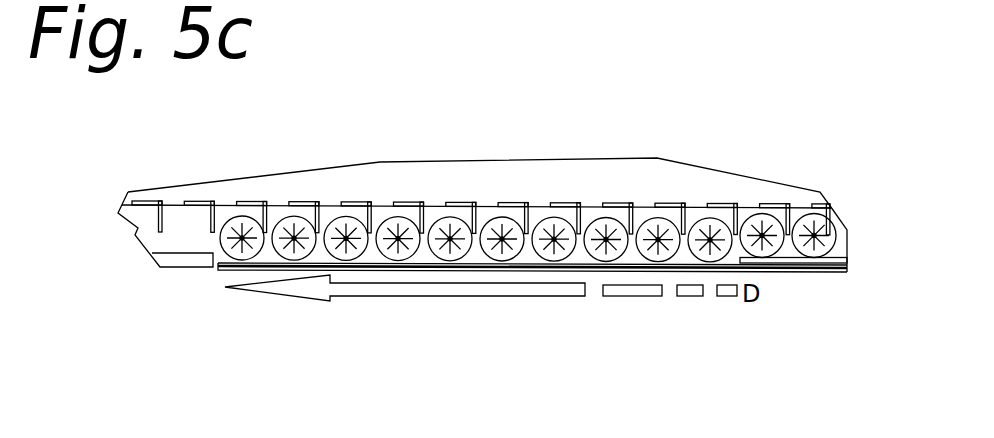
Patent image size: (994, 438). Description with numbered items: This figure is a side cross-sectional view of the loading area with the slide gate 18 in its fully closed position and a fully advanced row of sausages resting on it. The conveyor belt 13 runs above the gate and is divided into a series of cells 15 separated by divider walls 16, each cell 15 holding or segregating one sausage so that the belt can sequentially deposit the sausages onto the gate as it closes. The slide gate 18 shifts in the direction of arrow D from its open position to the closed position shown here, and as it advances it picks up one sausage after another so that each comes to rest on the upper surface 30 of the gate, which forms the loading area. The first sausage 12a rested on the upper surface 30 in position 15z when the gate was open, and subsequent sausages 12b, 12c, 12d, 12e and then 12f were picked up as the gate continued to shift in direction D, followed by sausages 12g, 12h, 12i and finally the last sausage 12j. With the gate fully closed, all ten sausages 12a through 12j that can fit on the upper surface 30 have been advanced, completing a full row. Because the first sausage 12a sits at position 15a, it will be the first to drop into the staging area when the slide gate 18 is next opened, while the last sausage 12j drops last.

The sausage 12a is at (239, 250).
The sausage 12b is at (293, 254).
The sausage 12c is at (340, 254).
The sausage 12d is at (393, 254).
The sausage 12e is at (446, 253).
The sausage 12f is at (500, 254).
The sausage 12g is at (550, 253).
The sausage 12h is at (602, 254).
The sausage 12i is at (656, 253).
The sausage 12j is at (709, 254).
The conveyor belt 13 is at (330, 205).
The cell 15 is at (570, 215).
The position 15a is at (226, 214).
The position 15z is at (725, 213).
The divider wall 16 is at (427, 213).
The slide gate 18 is at (717, 272).
The upper surface 30 is at (272, 264).